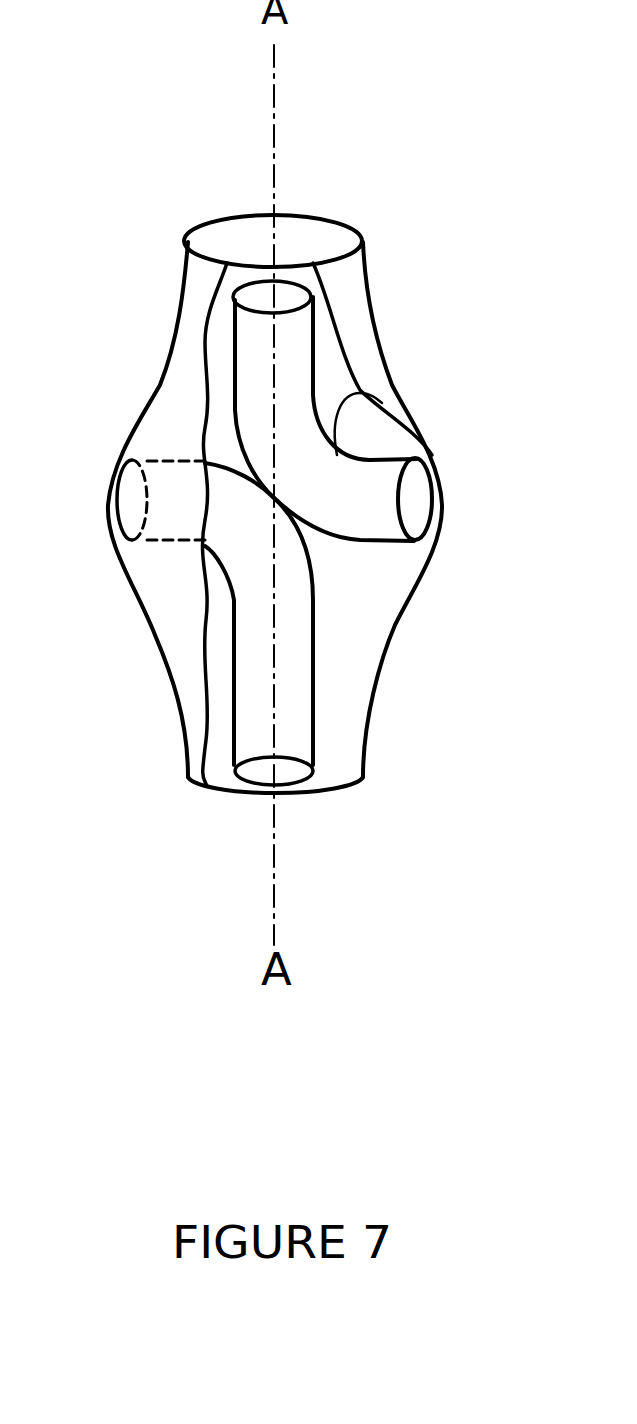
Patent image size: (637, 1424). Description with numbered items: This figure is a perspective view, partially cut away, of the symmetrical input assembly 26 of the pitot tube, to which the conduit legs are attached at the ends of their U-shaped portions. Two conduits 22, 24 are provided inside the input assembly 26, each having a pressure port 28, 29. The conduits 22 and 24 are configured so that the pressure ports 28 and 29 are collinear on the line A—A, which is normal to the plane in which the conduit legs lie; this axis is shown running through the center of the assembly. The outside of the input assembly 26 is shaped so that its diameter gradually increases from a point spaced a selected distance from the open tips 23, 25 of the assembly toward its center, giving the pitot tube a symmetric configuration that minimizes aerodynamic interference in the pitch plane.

The conduit 22 is at (410, 410).
The open tip 23 is at (338, 215).
The conduit 24 is at (405, 588).
The open tip 25 is at (228, 796).
The input assembly 26 is at (149, 398).
The pressure port 28 is at (253, 270).
The pressure port 29 is at (303, 800).